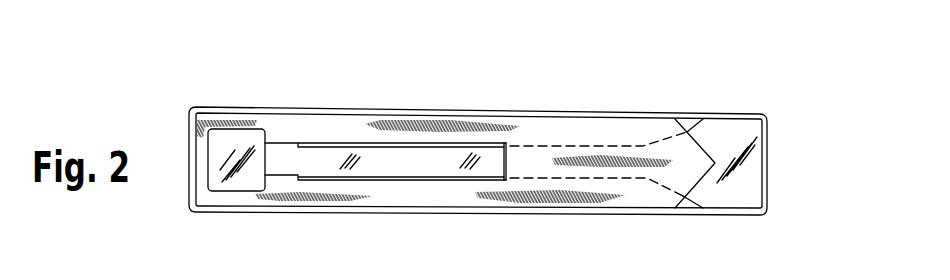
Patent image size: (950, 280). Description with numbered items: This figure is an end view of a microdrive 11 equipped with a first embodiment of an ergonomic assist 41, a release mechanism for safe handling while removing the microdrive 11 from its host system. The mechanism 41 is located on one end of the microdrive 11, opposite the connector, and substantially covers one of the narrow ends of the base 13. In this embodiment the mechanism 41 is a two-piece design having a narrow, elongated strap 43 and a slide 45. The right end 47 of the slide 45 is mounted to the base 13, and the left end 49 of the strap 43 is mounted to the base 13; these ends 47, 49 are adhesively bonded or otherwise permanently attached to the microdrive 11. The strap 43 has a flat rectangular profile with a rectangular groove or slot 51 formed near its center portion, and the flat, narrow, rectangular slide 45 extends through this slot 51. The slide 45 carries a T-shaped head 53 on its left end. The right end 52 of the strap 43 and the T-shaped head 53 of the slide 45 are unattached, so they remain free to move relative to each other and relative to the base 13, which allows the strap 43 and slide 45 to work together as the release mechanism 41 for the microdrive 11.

The microdrive 11 is at (506, 164).
The base 13 is at (620, 213).
The ergonomic assist 41 is at (455, 164).
The strap 43 is at (465, 197).
The slide 45 is at (338, 147).
The right end of slide 47 is at (743, 130).
The left end of strap 49 is at (207, 197).
The slot 51 is at (394, 179).
The right end of strap 52 is at (690, 150).
The T-shaped head 53 is at (242, 185).